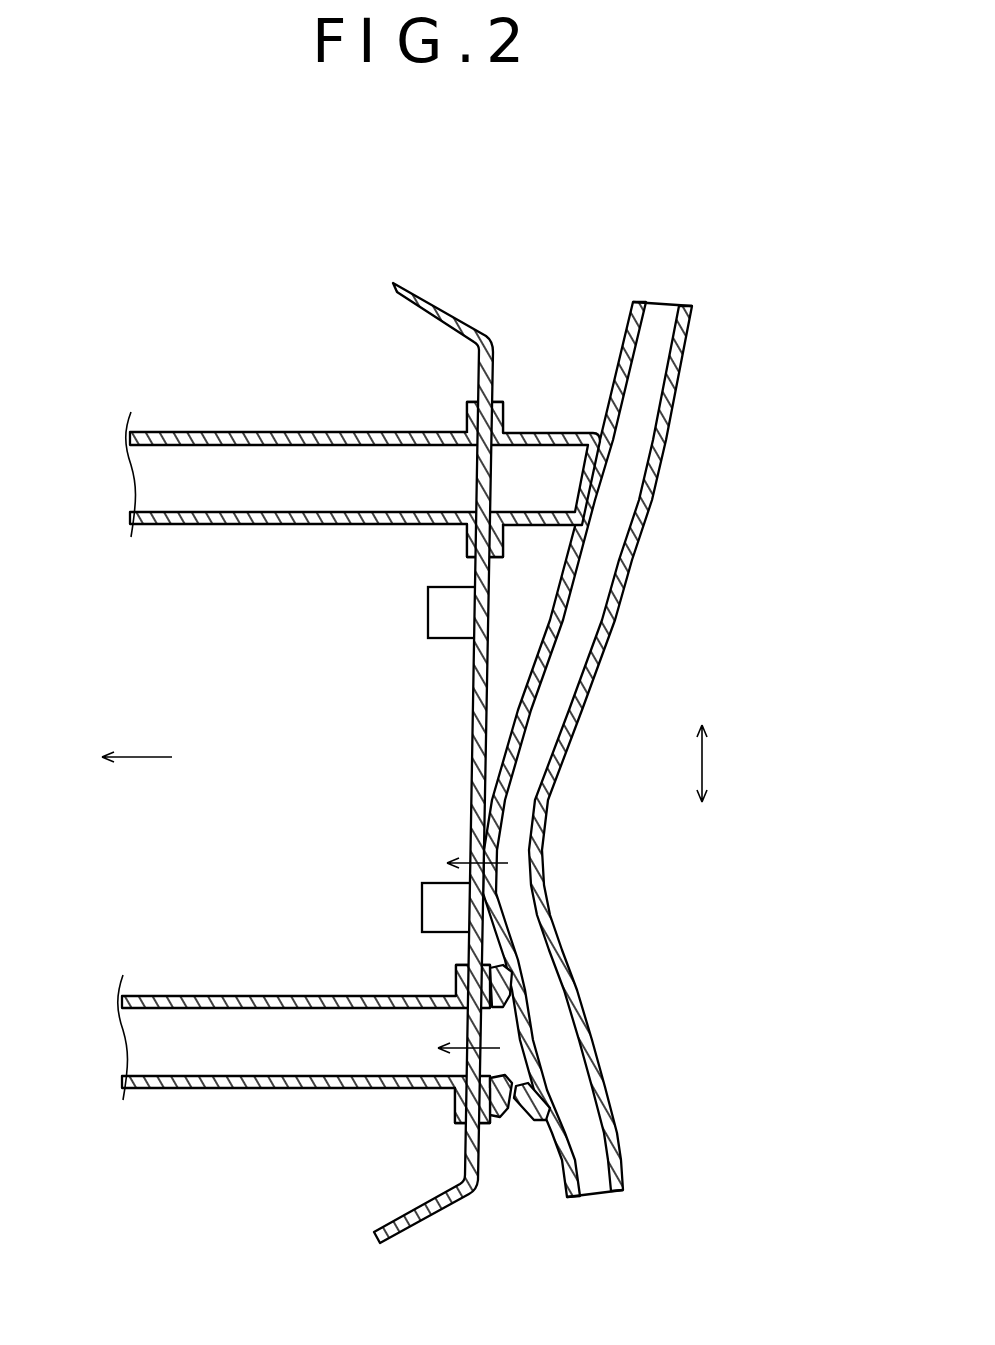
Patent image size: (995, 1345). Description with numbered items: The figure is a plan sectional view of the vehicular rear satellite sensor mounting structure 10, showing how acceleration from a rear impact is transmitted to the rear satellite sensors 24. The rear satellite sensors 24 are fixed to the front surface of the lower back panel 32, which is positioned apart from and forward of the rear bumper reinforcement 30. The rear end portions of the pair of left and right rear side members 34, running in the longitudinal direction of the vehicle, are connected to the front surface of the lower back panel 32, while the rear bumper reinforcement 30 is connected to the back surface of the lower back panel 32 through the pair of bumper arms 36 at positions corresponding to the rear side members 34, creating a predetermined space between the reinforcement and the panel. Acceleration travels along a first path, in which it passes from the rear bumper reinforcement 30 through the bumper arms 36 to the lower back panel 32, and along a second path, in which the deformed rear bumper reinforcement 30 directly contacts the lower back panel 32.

The vehicular rear satellite sensor mounting structure 10 is at (582, 298).
The rear satellite sensors 24 is at (430, 612).
The rear bumper reinforcement 30 is at (583, 700).
The lower back panel 32 is at (474, 722).
The rear side members 34 is at (295, 524).
The bumper arms 36 is at (550, 433).